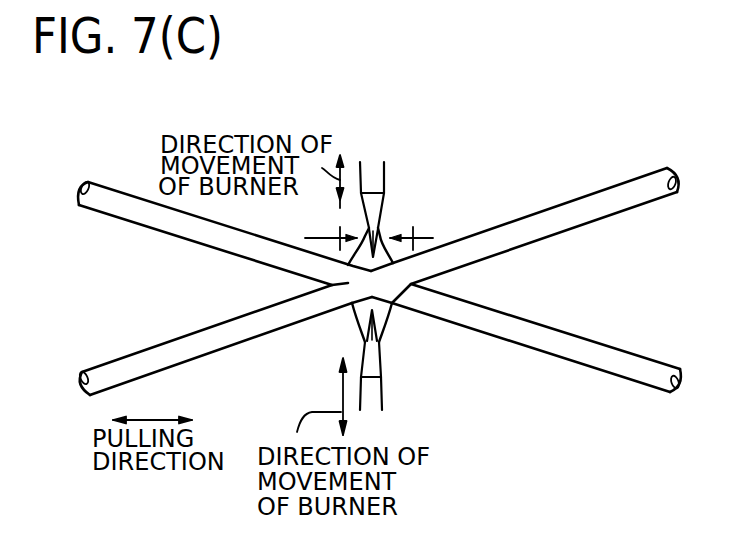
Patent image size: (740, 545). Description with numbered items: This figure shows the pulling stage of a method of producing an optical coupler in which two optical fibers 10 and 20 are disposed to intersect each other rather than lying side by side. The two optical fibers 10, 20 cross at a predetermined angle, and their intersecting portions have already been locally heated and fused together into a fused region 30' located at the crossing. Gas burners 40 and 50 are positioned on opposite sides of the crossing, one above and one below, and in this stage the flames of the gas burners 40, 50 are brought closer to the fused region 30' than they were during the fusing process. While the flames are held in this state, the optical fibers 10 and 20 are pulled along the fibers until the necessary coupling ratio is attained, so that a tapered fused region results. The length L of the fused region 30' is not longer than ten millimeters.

The optical fiber 10 is at (615, 195).
The optical fiber 20 is at (595, 358).
The fused region 30' is at (421, 309).
The gas burner 40 is at (383, 173).
The gas burner 50 is at (382, 392).
The length of the fused region L is at (413, 230).